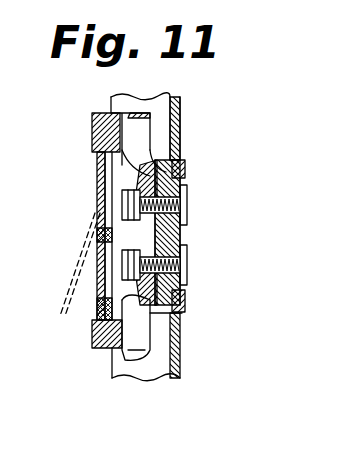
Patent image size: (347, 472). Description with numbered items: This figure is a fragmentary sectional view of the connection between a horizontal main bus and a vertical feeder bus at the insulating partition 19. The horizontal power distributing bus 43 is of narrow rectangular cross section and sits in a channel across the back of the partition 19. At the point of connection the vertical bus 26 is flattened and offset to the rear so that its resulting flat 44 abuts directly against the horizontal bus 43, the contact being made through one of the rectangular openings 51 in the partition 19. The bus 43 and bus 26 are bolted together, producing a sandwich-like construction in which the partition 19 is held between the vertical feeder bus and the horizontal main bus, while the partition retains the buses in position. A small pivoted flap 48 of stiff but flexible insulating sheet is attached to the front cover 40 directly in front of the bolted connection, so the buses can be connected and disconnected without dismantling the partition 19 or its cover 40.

The insulating partition 19 is at (183, 130).
The front cover 40 is at (92, 130).
The horizontal power distributing bus 43 is at (178, 164).
The flat 44 is at (186, 180).
The pivoted flap 48 is at (97, 195).
The rectangular opening 51 is at (180, 310).
The vertical bus 26 is at (150, 340).